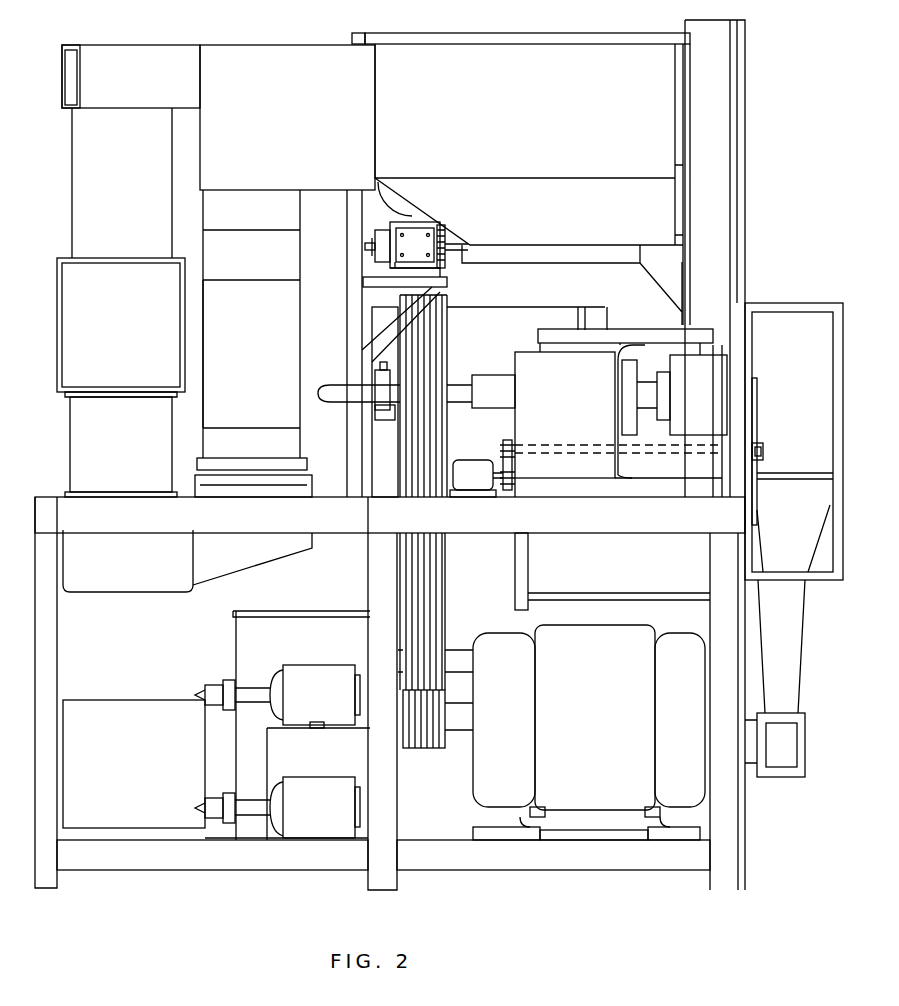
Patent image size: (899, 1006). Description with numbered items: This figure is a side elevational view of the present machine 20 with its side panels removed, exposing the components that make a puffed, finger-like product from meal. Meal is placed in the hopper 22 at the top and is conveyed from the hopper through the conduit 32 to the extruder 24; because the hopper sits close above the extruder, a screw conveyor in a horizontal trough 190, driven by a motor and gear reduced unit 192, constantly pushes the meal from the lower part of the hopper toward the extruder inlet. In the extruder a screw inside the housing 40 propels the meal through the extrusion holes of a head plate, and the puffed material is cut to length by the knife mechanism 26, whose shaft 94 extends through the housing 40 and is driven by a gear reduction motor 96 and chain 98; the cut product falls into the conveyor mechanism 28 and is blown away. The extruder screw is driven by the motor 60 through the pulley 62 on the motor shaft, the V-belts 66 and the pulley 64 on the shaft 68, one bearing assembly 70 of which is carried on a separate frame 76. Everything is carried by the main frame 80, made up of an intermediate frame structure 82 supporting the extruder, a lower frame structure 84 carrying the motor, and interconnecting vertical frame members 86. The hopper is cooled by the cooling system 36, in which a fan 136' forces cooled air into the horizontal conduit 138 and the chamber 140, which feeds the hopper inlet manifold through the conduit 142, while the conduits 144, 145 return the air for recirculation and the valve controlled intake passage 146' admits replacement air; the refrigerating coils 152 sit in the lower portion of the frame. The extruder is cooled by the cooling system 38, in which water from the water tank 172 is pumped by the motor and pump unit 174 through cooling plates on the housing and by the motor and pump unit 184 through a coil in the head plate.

The machine 20 is at (817, 190).
The hopper 22 is at (600, 42).
The extruder 24 is at (756, 380).
The knife mechanism 26 is at (763, 450).
The conveyor mechanism 28 is at (805, 713).
The conduit 32 is at (693, 330).
The cooling system 36 is at (150, 598).
The cooling system 38 is at (233, 668).
The housing 40 is at (582, 419).
The motor 60 is at (607, 724).
The pulley 62 is at (447, 752).
The pulley 64 is at (450, 310).
The V-belts 66 is at (432, 582).
The shaft 68 is at (462, 385).
The bearing assembly 70 is at (375, 381).
The frame 76 is at (378, 457).
The main frame 80 is at (494, 525).
The intermediate frame structure 82 is at (360, 530).
The lower frame structure 84 is at (480, 866).
The vertical frame members 86 is at (55, 878).
The shaft 94 is at (672, 452).
The gear reduction motor 96 is at (488, 488).
The chain 98 is at (504, 462).
The fan 136' is at (121, 447).
The horizontal conduit 138 is at (139, 334).
The chamber 140 is at (136, 199).
The conduit 142 is at (122, 62).
The conduit 144 is at (305, 178).
The conduit 145 is at (284, 352).
The valve controlled intake passage 146' is at (128, 561).
The coils 152 is at (140, 777).
The water tank 172 is at (325, 649).
The motor and pump unit 174 is at (334, 819).
The motor and pump unit 184 is at (334, 704).
The trough 190 is at (522, 258).
The motor and gear reduced unit 192 is at (415, 236).